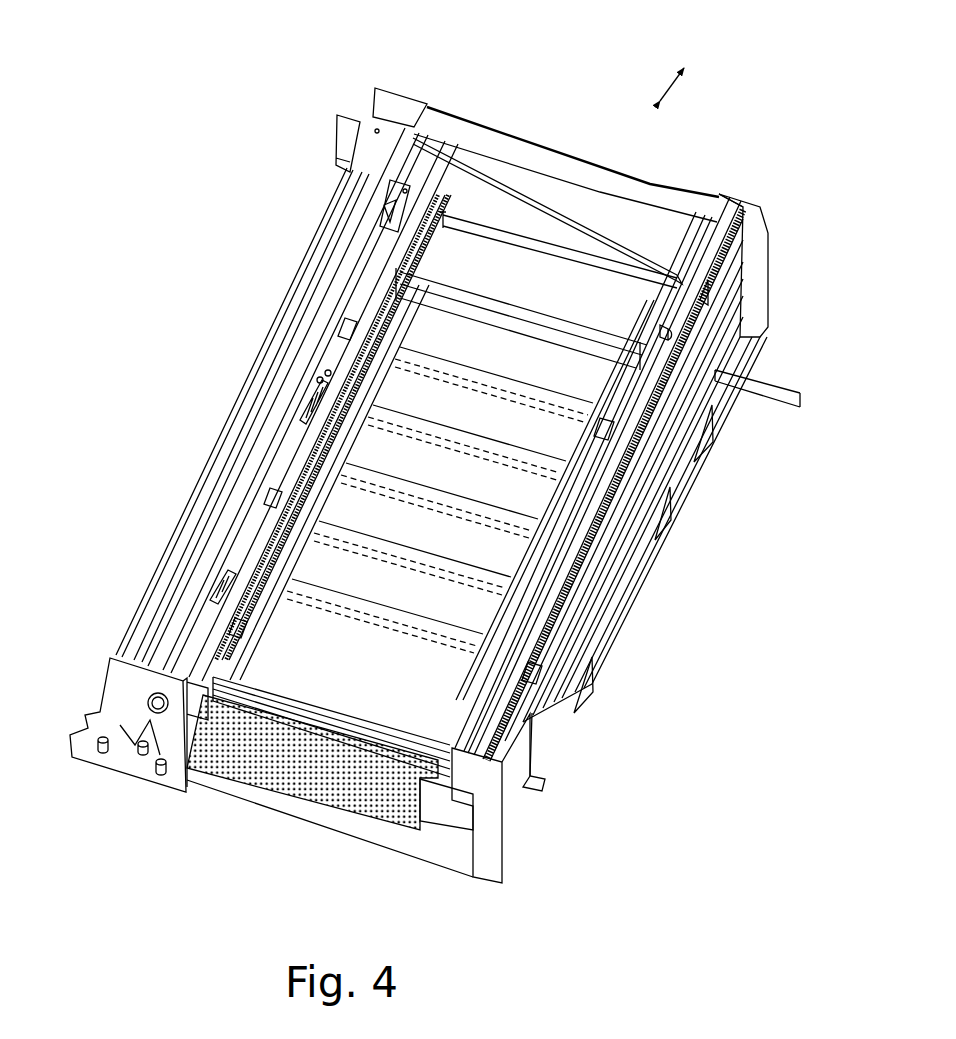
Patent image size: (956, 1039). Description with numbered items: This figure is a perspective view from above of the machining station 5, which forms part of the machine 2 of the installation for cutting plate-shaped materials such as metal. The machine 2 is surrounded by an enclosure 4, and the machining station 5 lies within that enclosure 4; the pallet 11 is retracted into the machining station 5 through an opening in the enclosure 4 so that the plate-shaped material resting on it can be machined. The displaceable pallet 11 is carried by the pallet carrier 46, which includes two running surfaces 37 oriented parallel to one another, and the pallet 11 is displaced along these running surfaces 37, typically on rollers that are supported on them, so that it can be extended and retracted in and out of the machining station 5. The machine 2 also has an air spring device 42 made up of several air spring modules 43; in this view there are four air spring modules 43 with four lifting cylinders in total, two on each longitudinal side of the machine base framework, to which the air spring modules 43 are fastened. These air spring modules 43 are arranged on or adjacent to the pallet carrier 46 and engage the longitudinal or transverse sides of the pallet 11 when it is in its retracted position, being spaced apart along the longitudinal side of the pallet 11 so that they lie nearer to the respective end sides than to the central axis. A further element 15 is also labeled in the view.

The machine 2 is at (625, 786).
The enclosure 4 is at (510, 788).
The machining station 5 is at (150, 391).
The pallet 11 is at (545, 523).
The end post 15 is at (745, 188).
The running surfaces 37 is at (697, 268).
The air spring device 42 is at (583, 403).
The air spring modules 43 is at (340, 345).
The pallet carrier 46 is at (462, 217).